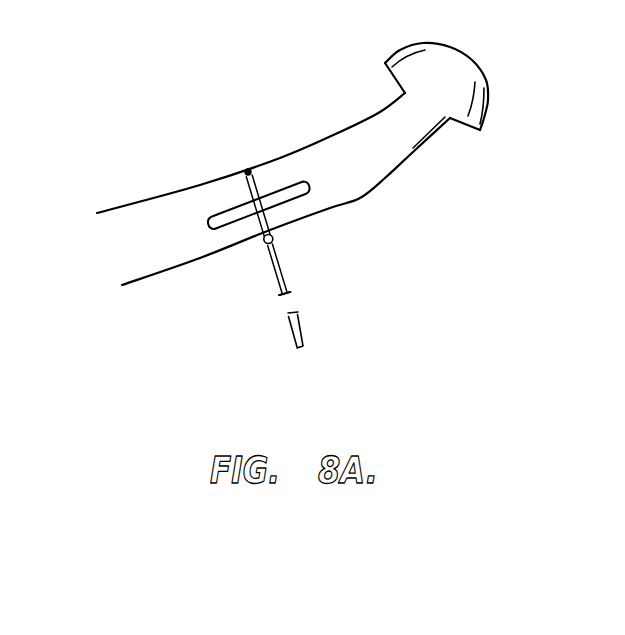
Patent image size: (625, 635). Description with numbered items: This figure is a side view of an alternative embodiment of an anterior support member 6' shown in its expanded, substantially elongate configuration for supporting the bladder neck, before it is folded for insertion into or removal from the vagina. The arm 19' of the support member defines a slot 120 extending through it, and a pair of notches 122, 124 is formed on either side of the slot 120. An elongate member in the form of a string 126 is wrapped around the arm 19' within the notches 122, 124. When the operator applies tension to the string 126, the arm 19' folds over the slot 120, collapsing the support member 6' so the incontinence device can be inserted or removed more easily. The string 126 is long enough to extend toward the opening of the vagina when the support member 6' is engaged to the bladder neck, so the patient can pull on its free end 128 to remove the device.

The anterior support member 6' is at (86, 55).
The arm 19' is at (292, 164).
The slot 120 is at (284, 183).
The notch 122 is at (245, 171).
The notch 124 is at (264, 244).
The string 126 is at (312, 289).
The free end 128 is at (297, 348).